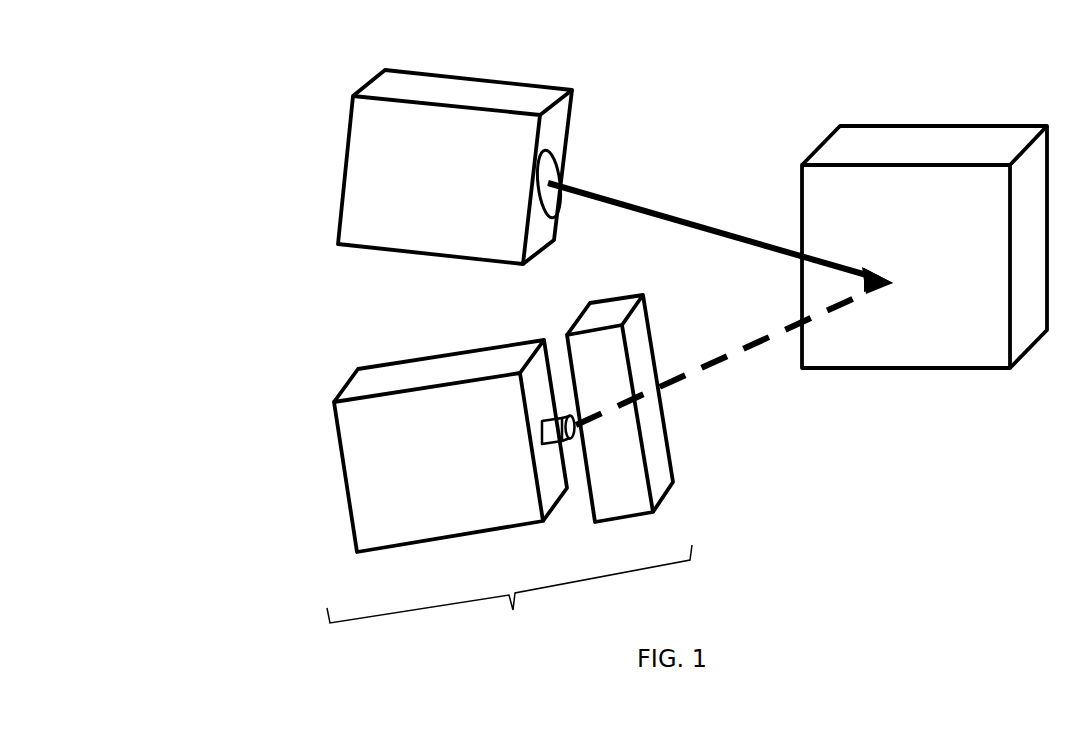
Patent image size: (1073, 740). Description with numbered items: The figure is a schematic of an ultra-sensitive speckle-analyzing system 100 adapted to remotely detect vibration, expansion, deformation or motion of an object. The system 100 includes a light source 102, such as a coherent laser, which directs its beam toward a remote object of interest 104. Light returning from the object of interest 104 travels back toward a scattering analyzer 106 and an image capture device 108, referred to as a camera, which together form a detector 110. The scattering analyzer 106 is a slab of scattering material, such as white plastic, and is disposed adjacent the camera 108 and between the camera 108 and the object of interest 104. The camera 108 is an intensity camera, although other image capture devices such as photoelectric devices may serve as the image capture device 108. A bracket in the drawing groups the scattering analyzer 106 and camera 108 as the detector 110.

The ultra-sensitive speckle-analyzing system 100 is at (226, 151).
The light source 102 is at (578, 76).
The remote object of interest 104 is at (819, 141).
The scattering analyzer 106 is at (569, 312).
The image capture device 108 is at (346, 364).
The detector 110 is at (514, 617).